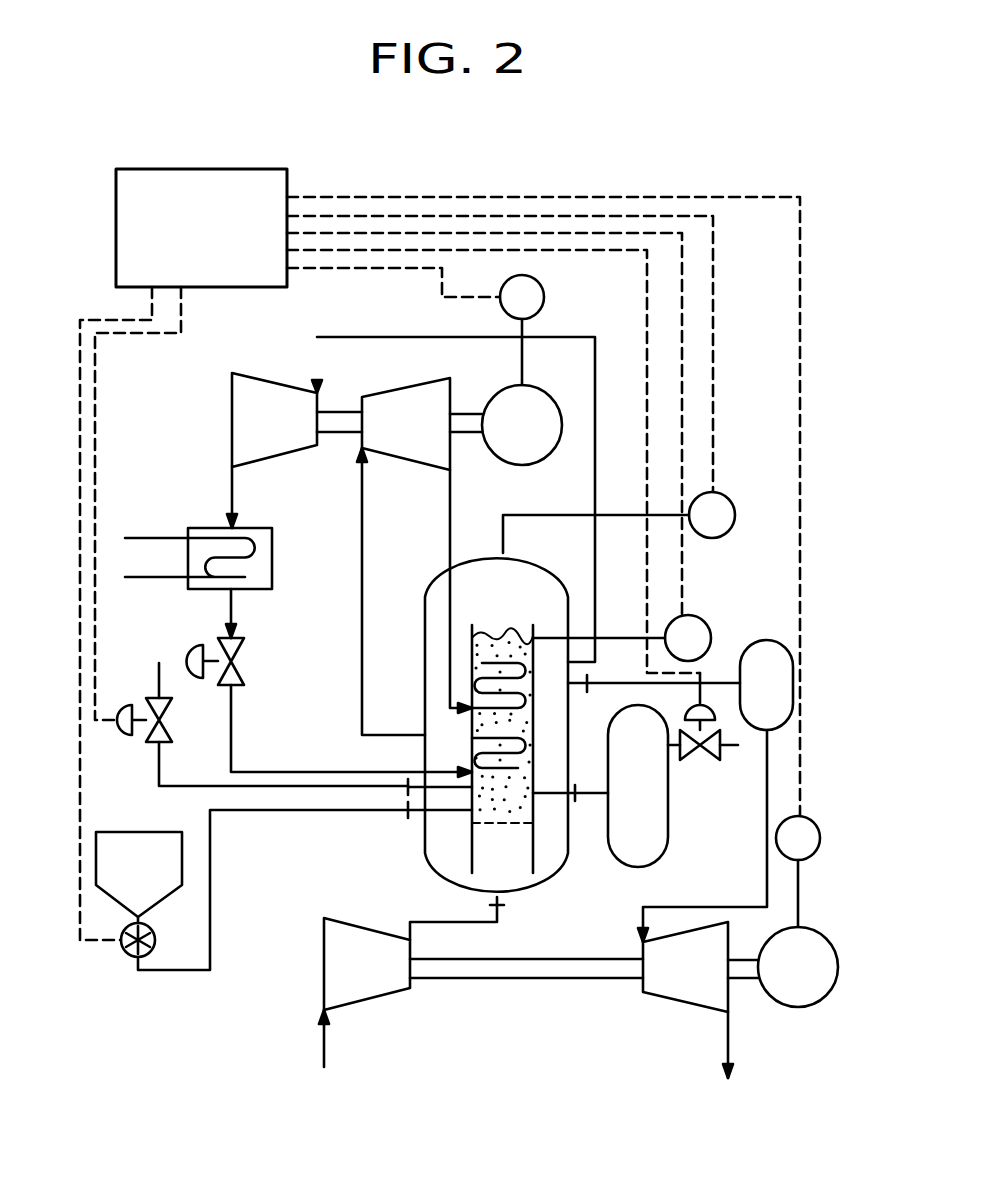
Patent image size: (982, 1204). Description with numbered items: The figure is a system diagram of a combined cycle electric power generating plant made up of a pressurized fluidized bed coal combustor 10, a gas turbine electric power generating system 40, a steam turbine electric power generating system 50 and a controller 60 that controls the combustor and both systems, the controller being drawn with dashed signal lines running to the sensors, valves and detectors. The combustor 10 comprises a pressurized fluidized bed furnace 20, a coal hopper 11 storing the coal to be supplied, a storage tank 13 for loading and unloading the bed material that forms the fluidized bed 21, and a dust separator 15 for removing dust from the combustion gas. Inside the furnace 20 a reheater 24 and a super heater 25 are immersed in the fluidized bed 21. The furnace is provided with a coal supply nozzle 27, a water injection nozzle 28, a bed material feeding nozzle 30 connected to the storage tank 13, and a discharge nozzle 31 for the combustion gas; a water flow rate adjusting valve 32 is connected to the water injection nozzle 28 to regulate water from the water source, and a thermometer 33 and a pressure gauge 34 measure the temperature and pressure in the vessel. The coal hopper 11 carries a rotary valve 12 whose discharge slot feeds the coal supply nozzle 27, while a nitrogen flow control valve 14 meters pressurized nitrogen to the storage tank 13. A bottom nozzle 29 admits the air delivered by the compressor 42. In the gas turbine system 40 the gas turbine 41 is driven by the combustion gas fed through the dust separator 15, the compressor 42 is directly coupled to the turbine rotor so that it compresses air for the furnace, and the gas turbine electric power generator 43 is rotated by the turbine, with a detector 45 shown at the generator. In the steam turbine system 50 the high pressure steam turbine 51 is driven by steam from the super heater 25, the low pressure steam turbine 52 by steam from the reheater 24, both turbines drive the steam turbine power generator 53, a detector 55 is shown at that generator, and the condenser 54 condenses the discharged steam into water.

The pressurized fluidized bed coal combustor 10 is at (527, 728).
The coal hopper 11 is at (152, 891).
The rotary valve 12 is at (126, 951).
The storage tank 13 is at (650, 813).
The nitrogen flow control valve 14 is at (700, 761).
The dust separator 15 is at (779, 703).
The pressurized fluidized bed furnace 20 is at (517, 599).
The fluidized bed 21 is at (502, 749).
The reheater 24 is at (478, 690).
The super heater 25 is at (478, 752).
The coal supply nozzle 27 is at (412, 818).
The water injection nozzle 28 is at (408, 797).
The fluidizing air inlet 29 is at (505, 902).
The bed material feeding nozzle 30 is at (576, 802).
The discharge nozzle 31 is at (586, 692).
The water flow rate adjusting valve 32 is at (155, 744).
The thermometer 33 is at (706, 622).
The pressure gauge 34 is at (730, 499).
The gas turbine electric power generating system 40 is at (578, 1015).
The gas turbine 41 is at (694, 989).
The compressor 42 is at (377, 984).
The gas turbine electric power generator 43 is at (812, 989).
The speed detector 45 is at (813, 821).
The steam turbine electric power generating system 50 is at (361, 536).
The high pressure steam turbine 51 is at (420, 443).
The low pressure steam turbine 52 is at (284, 443).
The steam turbine power generator 53 is at (537, 443).
The condenser 54 is at (272, 528).
The speed detector 55 is at (545, 297).
The controller 60 is at (213, 244).